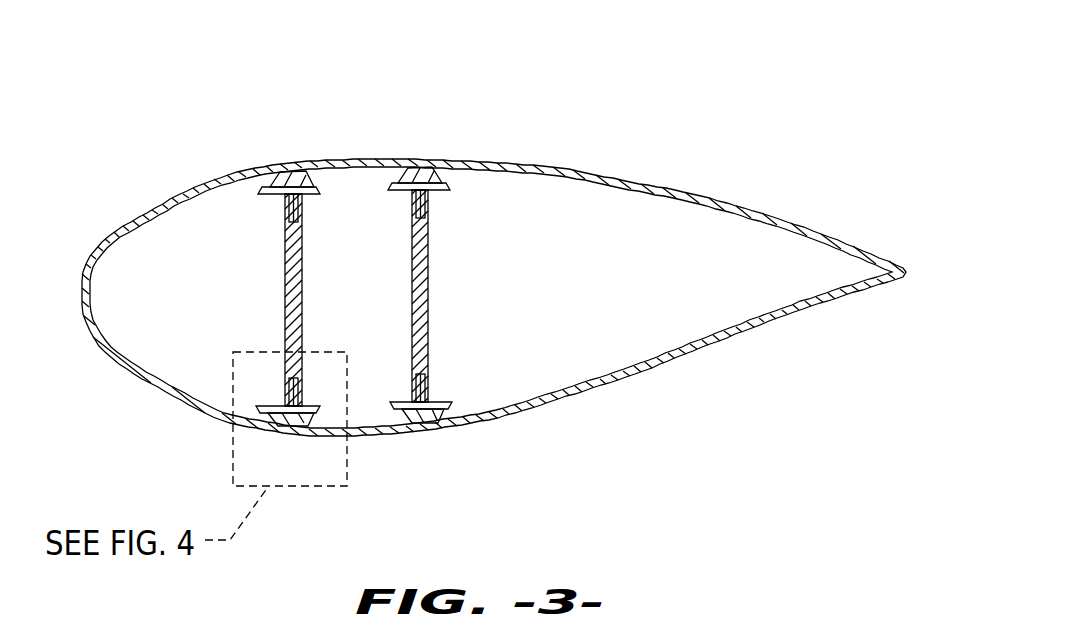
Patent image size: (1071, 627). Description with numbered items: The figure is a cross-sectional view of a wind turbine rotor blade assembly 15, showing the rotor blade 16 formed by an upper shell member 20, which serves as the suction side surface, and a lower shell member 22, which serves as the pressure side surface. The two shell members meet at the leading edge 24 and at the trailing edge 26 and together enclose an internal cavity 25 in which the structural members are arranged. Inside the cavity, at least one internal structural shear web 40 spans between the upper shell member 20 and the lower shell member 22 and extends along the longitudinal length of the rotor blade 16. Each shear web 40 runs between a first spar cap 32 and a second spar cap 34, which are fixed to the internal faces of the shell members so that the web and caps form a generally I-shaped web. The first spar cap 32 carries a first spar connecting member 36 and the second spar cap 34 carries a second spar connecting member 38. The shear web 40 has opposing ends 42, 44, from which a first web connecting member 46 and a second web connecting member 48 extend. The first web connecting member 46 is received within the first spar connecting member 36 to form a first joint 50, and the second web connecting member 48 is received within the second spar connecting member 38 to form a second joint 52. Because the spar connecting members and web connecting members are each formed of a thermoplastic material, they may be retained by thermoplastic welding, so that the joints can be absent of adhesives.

The rotor blade assembly 15 is at (732, 88).
The rotor blade 16 is at (731, 194).
The upper shell member 20 is at (588, 172).
The lower shell member 22 is at (640, 368).
The leading edge 24 is at (82, 287).
The internal cavity 25 is at (613, 285).
The trailing edge 26 is at (907, 275).
The first spar cap 32 is at (309, 164).
The second spar cap 34 is at (318, 430).
The first spar connecting member 36 is at (291, 168).
The second spar connecting member 38 is at (288, 432).
The shear web 40 is at (304, 318).
The first end 42 is at (285, 236).
The second end 44 is at (411, 385).
The first web connecting member 46 is at (273, 198).
The second web connecting member 48 is at (273, 397).
The first joint 50 is at (447, 194).
The second joint 52 is at (459, 390).